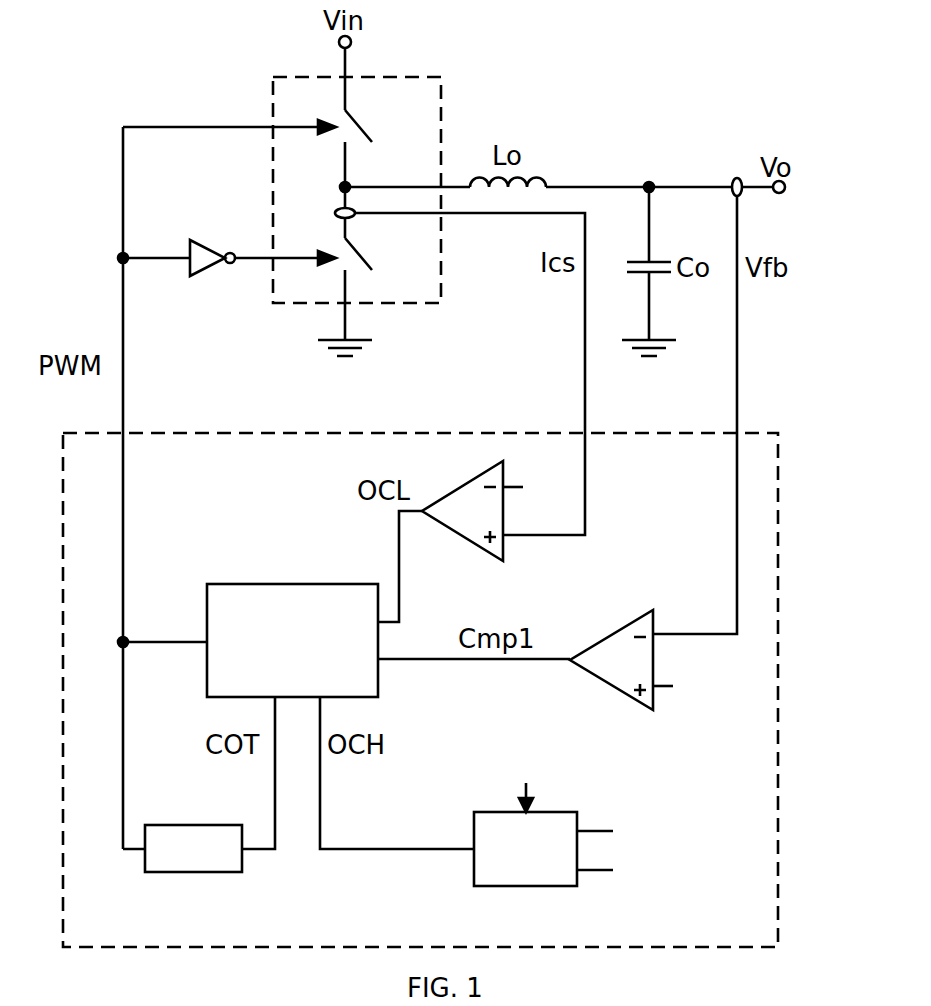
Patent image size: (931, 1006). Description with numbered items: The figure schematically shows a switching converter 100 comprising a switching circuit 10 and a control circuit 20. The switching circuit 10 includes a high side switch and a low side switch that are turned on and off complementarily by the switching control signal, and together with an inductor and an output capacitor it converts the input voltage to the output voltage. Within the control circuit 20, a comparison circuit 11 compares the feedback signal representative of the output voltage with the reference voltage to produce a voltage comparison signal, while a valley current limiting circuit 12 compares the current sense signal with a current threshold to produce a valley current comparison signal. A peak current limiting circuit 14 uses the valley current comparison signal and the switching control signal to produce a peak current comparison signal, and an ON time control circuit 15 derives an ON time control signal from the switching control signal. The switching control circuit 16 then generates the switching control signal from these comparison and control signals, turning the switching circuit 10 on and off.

The switching converter 100 is at (765, 110).
The switching circuit 10 is at (400, 77).
The control circuit 20 is at (752, 430).
The switching control circuit 16 is at (295, 584).
The valley current limiting circuit 12 is at (501, 511).
The comparison circuit 11 is at (652, 660).
The ON time control circuit 15 is at (193, 848).
The peak current limiting circuit 14 is at (577, 817).